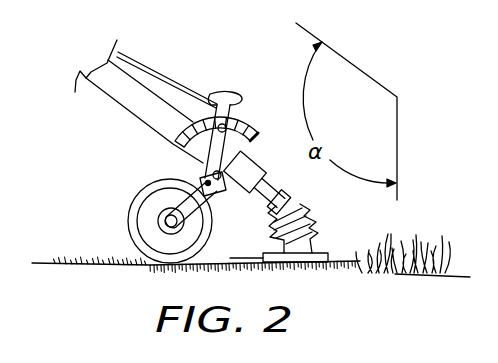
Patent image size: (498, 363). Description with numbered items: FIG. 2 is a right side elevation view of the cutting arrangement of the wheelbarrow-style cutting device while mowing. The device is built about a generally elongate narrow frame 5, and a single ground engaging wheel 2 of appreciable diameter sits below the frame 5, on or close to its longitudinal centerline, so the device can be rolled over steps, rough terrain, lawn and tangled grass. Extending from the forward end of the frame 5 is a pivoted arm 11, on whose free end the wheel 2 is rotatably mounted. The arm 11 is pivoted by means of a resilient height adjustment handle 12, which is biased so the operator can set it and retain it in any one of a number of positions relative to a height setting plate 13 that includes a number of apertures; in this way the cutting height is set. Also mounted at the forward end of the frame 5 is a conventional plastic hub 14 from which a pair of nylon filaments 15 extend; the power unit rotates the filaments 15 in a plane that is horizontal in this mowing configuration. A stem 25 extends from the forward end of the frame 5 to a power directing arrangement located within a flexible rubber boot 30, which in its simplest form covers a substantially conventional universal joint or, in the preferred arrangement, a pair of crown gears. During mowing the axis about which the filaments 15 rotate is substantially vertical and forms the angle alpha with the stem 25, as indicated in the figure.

The ground engaging wheel 2 is at (150, 206).
The frame 5 is at (150, 72).
The pivoted arm 11 is at (180, 206).
The resilient height adjustment handle 12 is at (232, 100).
The height setting plate 13 is at (241, 123).
The plastic hub 14 is at (322, 250).
The nylon filaments 15 is at (248, 257).
The stem 25 is at (296, 150).
The flexible rubber boot 30 is at (329, 181).